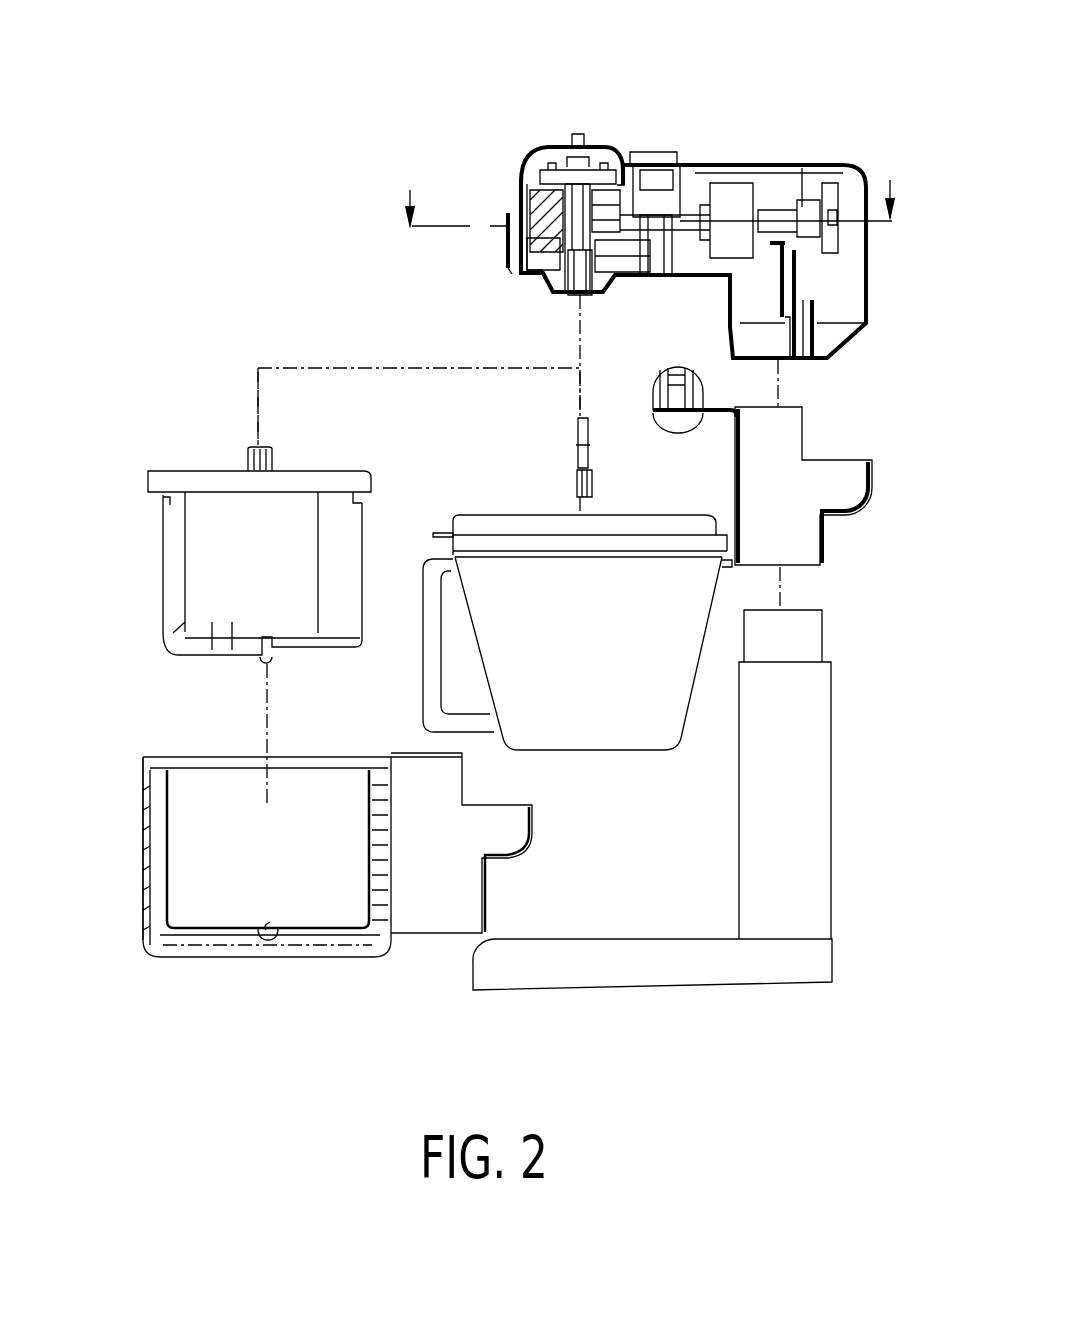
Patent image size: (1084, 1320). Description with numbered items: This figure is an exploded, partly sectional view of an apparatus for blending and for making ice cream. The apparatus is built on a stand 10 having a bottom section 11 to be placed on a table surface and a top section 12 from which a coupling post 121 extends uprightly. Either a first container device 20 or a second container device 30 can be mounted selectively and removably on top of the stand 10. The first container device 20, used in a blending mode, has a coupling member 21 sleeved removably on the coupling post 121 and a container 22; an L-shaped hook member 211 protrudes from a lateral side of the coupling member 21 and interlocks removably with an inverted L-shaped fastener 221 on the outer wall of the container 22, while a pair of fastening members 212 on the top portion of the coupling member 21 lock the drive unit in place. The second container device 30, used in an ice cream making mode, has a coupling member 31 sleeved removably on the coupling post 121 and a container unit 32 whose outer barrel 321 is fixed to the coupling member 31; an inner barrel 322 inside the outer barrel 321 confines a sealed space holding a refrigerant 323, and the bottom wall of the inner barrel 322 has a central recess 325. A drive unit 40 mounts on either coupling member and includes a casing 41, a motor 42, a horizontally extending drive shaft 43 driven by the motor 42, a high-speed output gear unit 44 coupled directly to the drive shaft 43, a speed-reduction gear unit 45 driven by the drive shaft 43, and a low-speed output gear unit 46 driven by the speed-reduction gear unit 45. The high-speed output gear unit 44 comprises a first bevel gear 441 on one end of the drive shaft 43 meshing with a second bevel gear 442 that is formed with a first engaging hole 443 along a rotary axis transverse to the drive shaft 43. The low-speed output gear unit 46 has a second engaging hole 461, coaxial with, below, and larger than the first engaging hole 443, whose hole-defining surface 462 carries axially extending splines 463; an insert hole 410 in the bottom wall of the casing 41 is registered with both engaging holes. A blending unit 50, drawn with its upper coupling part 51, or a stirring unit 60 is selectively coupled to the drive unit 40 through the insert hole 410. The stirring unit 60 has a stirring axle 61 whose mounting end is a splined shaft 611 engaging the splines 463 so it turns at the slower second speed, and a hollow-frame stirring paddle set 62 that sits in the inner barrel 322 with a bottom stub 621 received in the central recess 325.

The stand 10 is at (850, 880).
The bottom section 11 is at (624, 962).
The top section 12 is at (793, 703).
The coupling post 121 is at (800, 633).
The first container device 20 is at (872, 525).
The coupling member 21 is at (872, 492).
The L-shaped hook member 211 is at (721, 596).
The fastening members 212 is at (680, 395).
The container 22 is at (620, 668).
The inverted L-shaped fastener 221 is at (732, 502).
The second container device 30 is at (170, 980).
The coupling member 31 is at (488, 897).
The container unit 32 is at (147, 830).
The outer barrel 321 is at (335, 962).
The inner barrel 322 is at (170, 812).
The refrigerant 323 is at (148, 808).
The central recess 325 is at (268, 937).
The drive unit 40 is at (748, 148).
The casing 41 is at (787, 163).
The motor 42 is at (727, 185).
The drive shaft 43 is at (702, 210).
The high-speed output gear unit 44 is at (608, 203).
The first bevel gear 441 is at (613, 190).
The second bevel gear 442 is at (533, 173).
The first engaging hole 443 is at (540, 210).
The speed-reduction gear unit 45 is at (653, 265).
The low-speed output gear unit 46 is at (616, 278).
The second engaging hole 461 is at (553, 287).
The hole-defining surface 462 is at (547, 270).
The splines 463 is at (580, 296).
The insert hole 410 is at (600, 387).
The blending unit 50 is at (565, 485).
The coupling pin 51 is at (584, 441).
The stirring unit 60 is at (178, 470).
The stirring axle 61 is at (280, 460).
The splined shaft 611 is at (258, 440).
The stirring paddle set 62 is at (170, 567).
The stub 621 is at (272, 666).